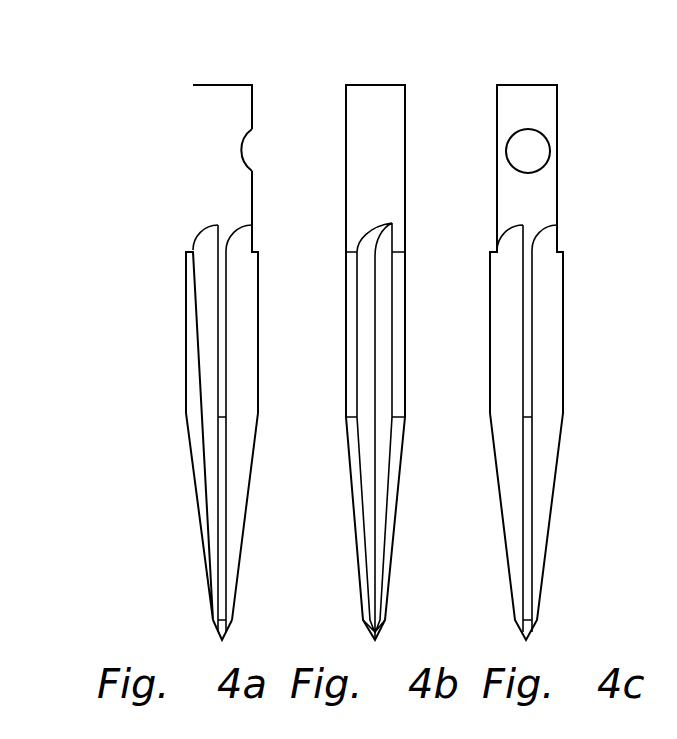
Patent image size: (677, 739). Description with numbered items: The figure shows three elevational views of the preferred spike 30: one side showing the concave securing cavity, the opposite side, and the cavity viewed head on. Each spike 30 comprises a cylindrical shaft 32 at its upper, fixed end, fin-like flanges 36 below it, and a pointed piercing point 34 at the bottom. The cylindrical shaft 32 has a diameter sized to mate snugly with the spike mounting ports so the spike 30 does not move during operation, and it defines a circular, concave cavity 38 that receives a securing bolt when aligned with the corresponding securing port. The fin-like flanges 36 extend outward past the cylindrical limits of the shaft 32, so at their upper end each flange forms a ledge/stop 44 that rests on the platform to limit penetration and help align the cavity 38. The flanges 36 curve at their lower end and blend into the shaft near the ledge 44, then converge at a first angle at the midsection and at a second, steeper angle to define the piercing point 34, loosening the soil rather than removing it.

In FIG. 4A, the spike 30 is at (140, 246).
In FIG. 4B, the cylindrical shaft 32 is at (357, 85).
In FIG. 4A, the piercing point 34 is at (218, 635).
In FIG. 4C, the fin-like flanges 36 is at (533, 352).
In FIG. 4A, the cavity 38 is at (246, 157).
In FIG. 4C, the cavity 38 is at (532, 151).
In FIG. 4C, the ledge/stop 44 is at (558, 250).